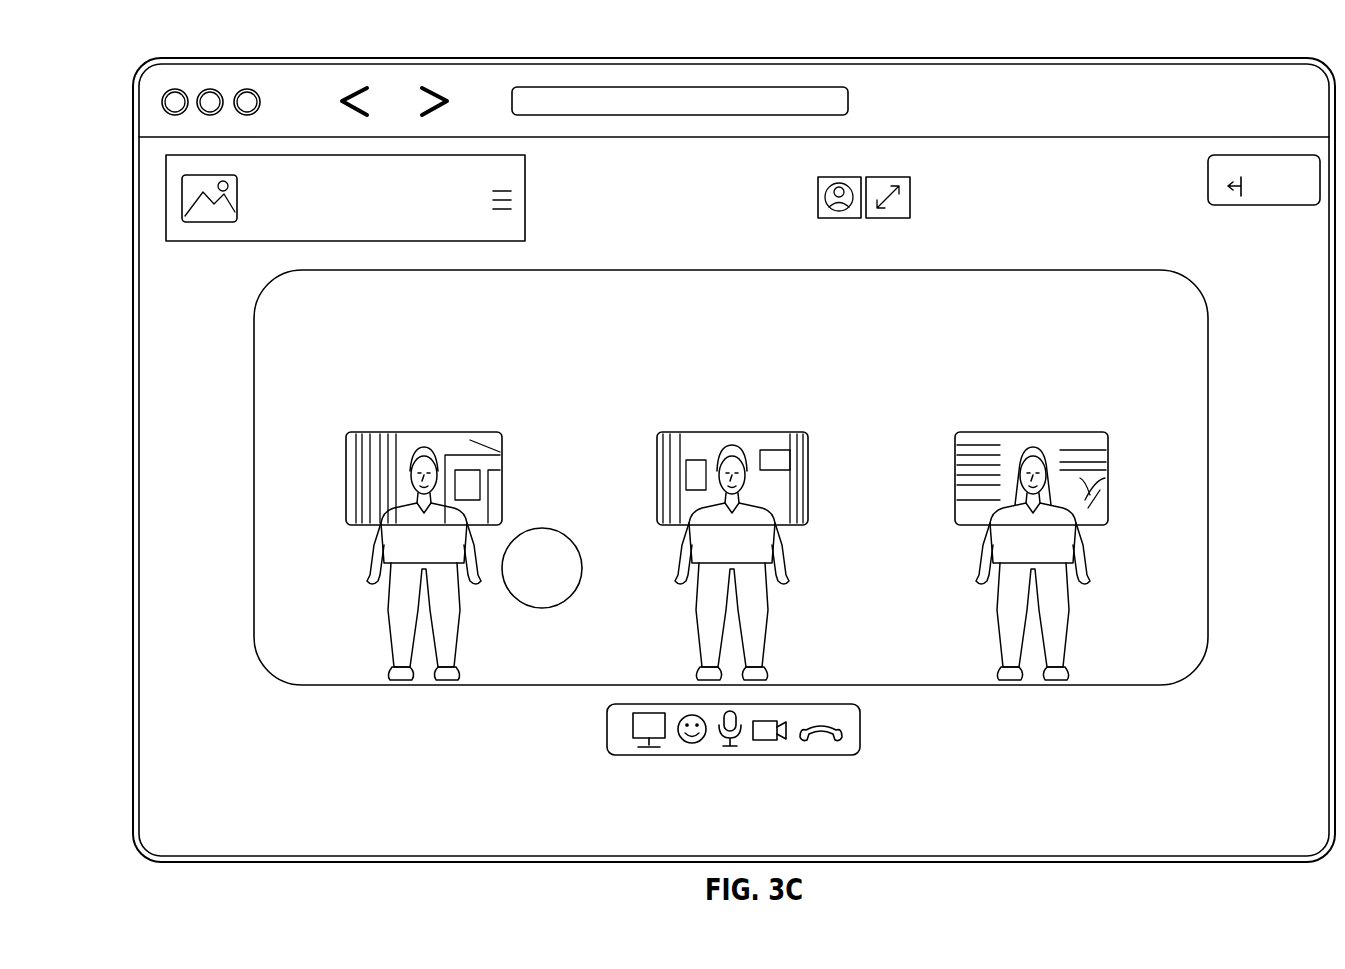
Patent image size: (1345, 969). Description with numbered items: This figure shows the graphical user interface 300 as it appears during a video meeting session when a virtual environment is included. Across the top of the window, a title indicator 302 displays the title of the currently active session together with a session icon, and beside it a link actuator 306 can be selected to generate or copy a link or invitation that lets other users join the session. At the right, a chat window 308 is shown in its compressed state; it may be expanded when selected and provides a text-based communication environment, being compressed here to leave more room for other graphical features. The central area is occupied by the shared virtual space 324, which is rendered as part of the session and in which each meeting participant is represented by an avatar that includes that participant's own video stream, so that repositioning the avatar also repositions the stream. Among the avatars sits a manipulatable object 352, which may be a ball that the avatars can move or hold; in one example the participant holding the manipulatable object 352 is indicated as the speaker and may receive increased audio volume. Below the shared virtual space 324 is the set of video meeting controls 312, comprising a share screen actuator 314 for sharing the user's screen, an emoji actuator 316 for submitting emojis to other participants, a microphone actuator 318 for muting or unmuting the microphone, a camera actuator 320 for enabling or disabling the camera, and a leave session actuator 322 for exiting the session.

The graphical user interface 300 is at (168, 52).
The title indicator 302 is at (182, 192).
The link actuator 306 is at (885, 177).
The chat window 308 is at (1208, 178).
The set of video meeting controls 312 is at (860, 722).
The share screen actuator 314 is at (633, 725).
The emoji actuator 316 is at (692, 745).
The microphone actuator 318 is at (730, 748).
The camera actuator 320 is at (770, 745).
The leave session actuator 322 is at (835, 742).
The shared virtual space 324 is at (254, 526).
The manipulatable object 352 is at (545, 528).